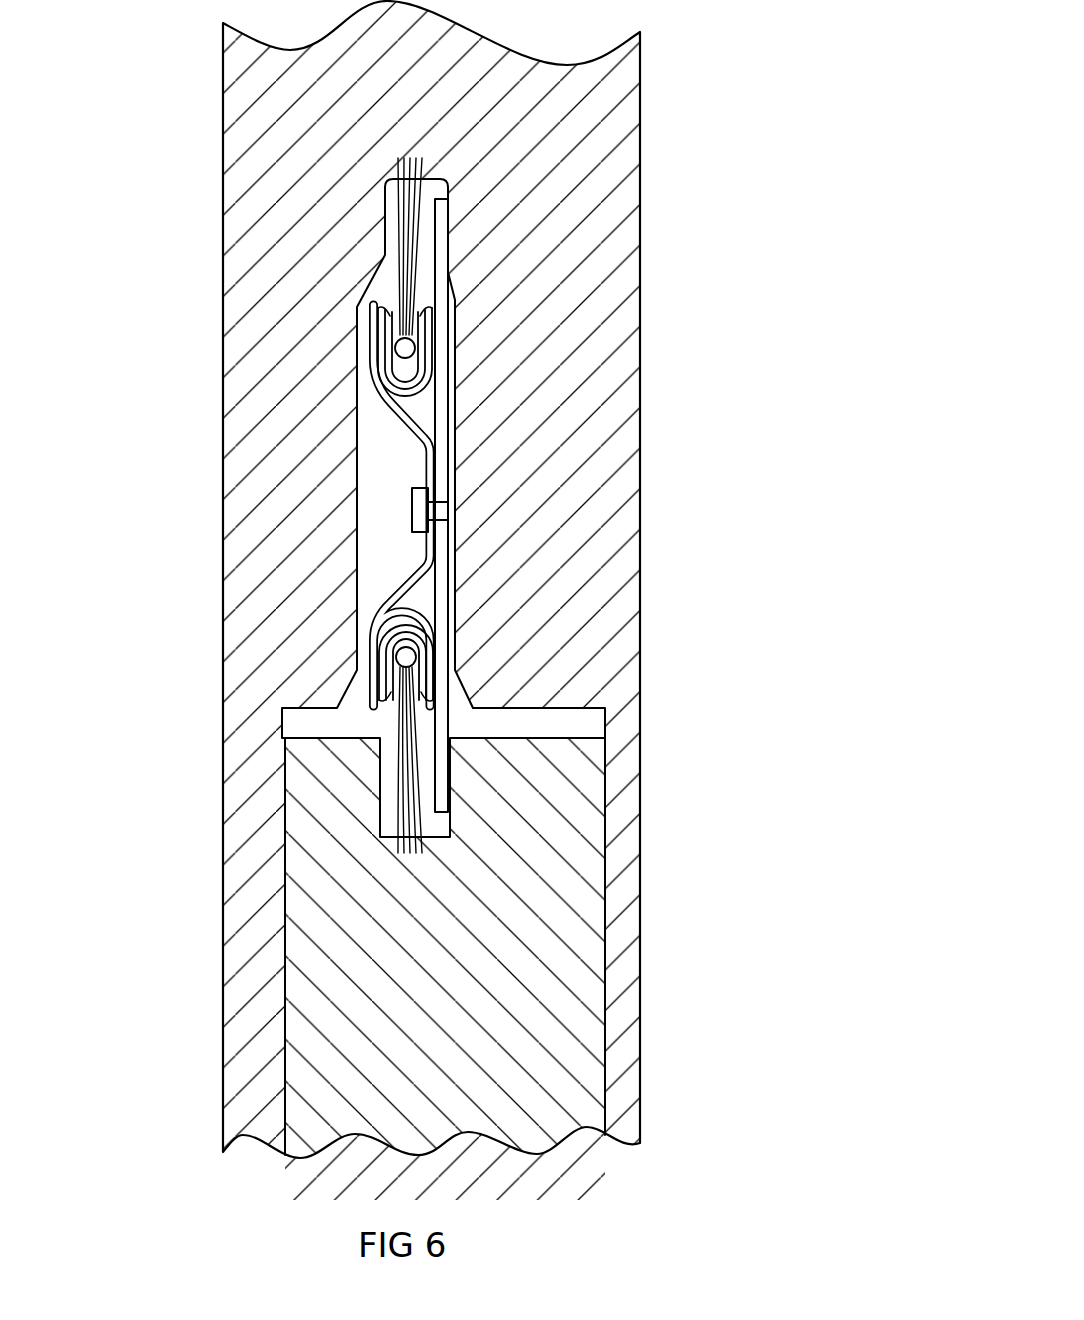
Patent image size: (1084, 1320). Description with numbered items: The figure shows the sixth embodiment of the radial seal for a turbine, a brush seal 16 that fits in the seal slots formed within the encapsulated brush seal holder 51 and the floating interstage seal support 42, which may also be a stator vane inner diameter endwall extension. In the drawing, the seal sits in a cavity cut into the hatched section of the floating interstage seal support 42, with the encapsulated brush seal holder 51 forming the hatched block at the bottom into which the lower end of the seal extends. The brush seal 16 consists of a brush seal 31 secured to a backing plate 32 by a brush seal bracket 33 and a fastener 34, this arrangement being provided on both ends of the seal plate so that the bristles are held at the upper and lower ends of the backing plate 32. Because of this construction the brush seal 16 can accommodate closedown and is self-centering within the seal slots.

The brush seal 16 is at (438, 548).
The brush seal 31 is at (410, 213).
The backing plate 32 is at (440, 398).
The brush seal bracket 33 is at (388, 405).
The fastener 34 is at (420, 508).
The floating interstage seal support 42 is at (750, 421).
The encapsulated brush seal holder 51 is at (412, 950).